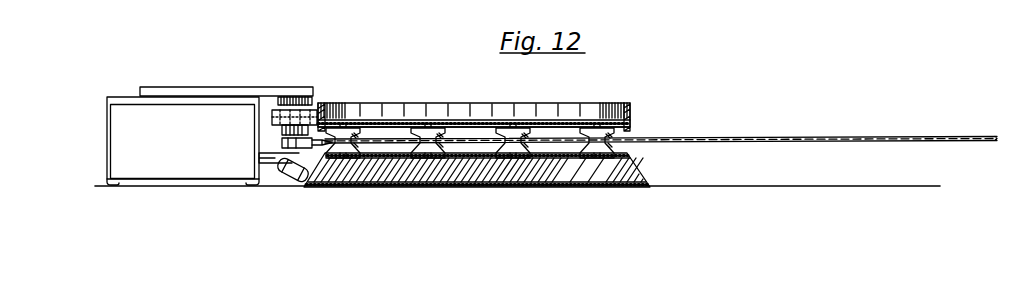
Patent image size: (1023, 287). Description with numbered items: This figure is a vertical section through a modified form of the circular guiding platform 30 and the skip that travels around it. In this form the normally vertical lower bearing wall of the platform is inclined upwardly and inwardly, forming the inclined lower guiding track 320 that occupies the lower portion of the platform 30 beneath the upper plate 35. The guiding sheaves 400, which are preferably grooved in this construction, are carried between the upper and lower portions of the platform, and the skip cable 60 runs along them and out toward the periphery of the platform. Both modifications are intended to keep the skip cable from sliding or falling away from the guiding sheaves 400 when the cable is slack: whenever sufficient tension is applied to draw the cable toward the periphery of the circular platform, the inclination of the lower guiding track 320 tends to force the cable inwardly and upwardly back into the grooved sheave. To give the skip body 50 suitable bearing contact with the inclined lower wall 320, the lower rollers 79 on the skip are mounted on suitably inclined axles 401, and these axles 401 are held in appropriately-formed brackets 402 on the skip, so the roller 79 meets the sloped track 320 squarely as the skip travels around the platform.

The circular platform 30 is at (547, 187).
The upper plate 35 is at (632, 110).
The housing box 50 is at (157, 107).
The rod 60 is at (745, 137).
The lower rollers 79 is at (292, 158).
The lower guiding track 320 is at (643, 168).
The sheaves 400 is at (614, 147).
The inclined axles 401 is at (305, 170).
The brackets 402 is at (280, 158).